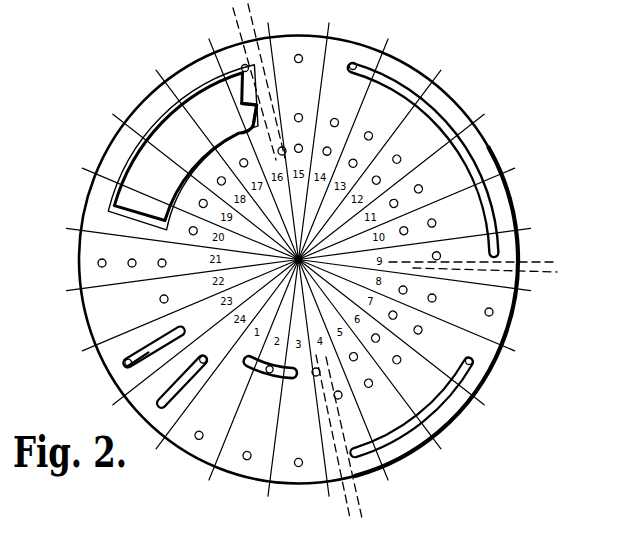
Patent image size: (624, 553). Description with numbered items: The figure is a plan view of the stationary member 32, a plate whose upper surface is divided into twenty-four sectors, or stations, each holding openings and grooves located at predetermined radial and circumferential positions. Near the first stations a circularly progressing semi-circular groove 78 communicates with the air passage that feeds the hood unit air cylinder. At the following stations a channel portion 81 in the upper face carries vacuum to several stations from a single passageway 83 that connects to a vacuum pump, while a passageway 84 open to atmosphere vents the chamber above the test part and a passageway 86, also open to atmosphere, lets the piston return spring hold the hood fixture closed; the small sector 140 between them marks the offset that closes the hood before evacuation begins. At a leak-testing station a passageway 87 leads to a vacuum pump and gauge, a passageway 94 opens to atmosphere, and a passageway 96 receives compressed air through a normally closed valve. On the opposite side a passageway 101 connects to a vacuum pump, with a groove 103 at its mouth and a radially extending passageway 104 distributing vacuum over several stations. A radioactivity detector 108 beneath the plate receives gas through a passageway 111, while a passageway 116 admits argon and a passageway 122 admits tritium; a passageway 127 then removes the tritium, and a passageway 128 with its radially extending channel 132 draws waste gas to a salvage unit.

The stationary member 32 is at (512, 197).
The circularly progressing semi-circular groove 78 is at (247, 364).
The channel portion 81 is at (437, 406).
The passageway 83 is at (473, 361).
The passageway 84 is at (341, 398).
The passageway 86 is at (316, 376).
The passageway 87 is at (493, 312).
The passageway 94 is at (431, 302).
The passageway 96 is at (407, 290).
The passageway 101 is at (243, 65).
The groove 103 is at (213, 80).
The radially extending passageway 104 is at (256, 105).
The radioactivity detector 108 is at (282, 147).
The passageway 111 is at (98, 263).
The passageway 116 is at (131, 267).
The passageway 122 is at (160, 260).
The passageway 127 is at (160, 299).
The passageway 128 is at (128, 366).
The radially extending channel 132 is at (146, 360).
The sector 140 is at (362, 518).